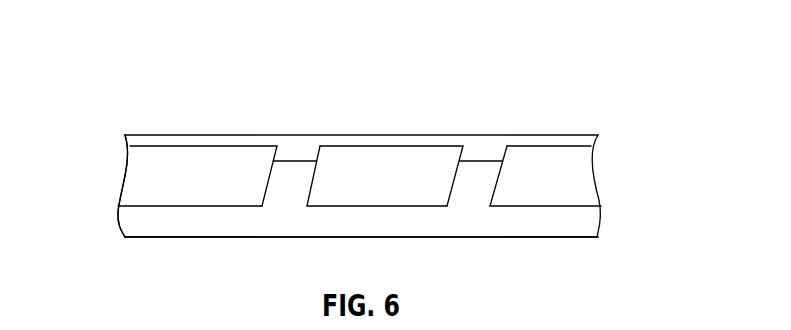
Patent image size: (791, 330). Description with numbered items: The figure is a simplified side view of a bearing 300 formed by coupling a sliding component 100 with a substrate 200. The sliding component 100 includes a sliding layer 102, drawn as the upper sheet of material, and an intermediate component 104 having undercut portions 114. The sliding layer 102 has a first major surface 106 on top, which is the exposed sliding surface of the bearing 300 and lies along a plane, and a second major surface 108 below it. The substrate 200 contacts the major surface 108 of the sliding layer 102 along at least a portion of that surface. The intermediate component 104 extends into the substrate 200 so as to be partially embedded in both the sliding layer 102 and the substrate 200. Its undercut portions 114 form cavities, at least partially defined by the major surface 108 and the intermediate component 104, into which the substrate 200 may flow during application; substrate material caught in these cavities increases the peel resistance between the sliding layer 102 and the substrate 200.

The bearing 300 is at (450, 58).
The sliding component 100 is at (110, 135).
The sliding layer 102 is at (500, 149).
The intermediate component 104 is at (568, 173).
The major surface 106 is at (294, 136).
The major surface 108 is at (283, 162).
The undercut portion 114 is at (302, 162).
The substrate 200 is at (583, 219).